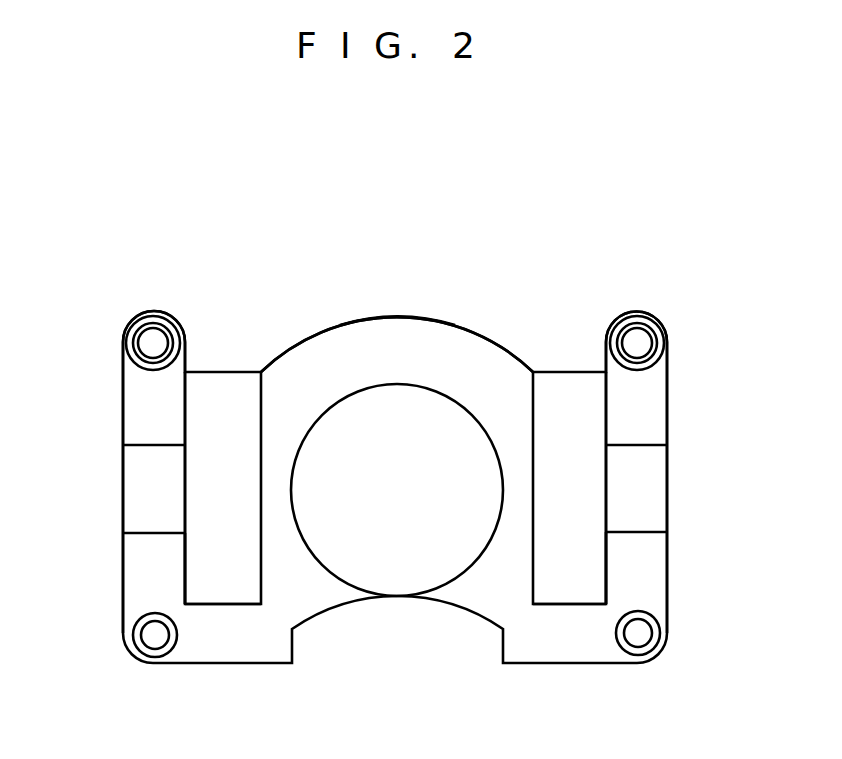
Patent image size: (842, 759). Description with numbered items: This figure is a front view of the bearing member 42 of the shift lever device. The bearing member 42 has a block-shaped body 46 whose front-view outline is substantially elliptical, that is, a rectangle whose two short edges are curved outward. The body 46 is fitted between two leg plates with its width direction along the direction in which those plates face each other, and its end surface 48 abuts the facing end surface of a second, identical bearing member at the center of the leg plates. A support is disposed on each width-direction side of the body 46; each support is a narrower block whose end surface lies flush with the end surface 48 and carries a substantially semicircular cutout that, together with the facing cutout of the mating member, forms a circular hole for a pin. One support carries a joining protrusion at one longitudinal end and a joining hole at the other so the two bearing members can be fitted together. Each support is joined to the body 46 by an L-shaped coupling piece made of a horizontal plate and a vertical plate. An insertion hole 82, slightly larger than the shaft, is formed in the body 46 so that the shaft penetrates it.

The bearing member 42 is at (437, 206).
The body 46 is at (430, 324).
The end surface 48 is at (376, 331).
The insertion hole 82 is at (443, 402).